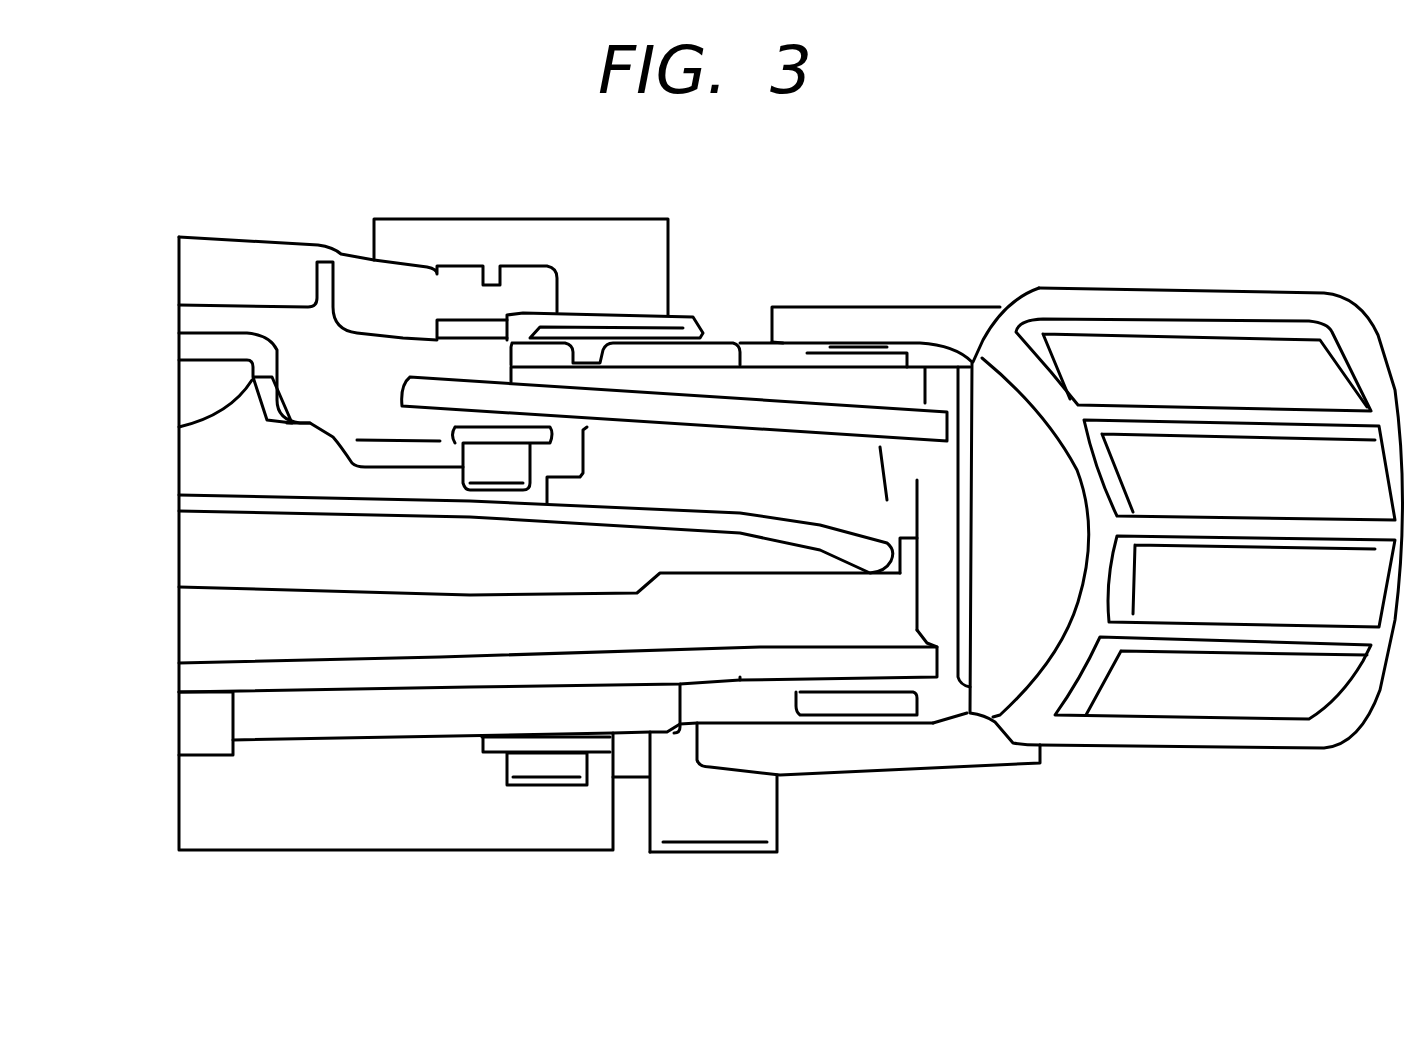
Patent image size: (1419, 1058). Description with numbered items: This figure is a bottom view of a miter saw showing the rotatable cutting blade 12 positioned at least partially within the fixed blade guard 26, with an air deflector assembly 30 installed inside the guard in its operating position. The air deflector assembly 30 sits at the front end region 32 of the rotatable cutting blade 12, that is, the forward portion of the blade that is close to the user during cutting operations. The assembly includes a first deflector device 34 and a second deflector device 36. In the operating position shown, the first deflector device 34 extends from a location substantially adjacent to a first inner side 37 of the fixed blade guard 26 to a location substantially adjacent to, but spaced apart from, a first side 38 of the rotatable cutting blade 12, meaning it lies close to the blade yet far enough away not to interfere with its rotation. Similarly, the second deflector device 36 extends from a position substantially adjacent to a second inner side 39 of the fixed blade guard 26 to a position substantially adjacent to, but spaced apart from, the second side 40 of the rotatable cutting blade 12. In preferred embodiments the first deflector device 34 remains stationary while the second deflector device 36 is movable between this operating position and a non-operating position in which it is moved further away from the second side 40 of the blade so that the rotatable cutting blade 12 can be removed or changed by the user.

The rotatable cutting blade 12 is at (197, 500).
The fixed blade guard 26 is at (363, 690).
The air deflector assembly 30 is at (890, 637).
The front end region 32 is at (897, 533).
The first deflector device 34 is at (742, 632).
The second deflector device 36 is at (712, 498).
The first inner side 37 is at (260, 662).
The first side 38 is at (773, 557).
The second inner side 39 is at (632, 417).
The second side 40 is at (800, 515).